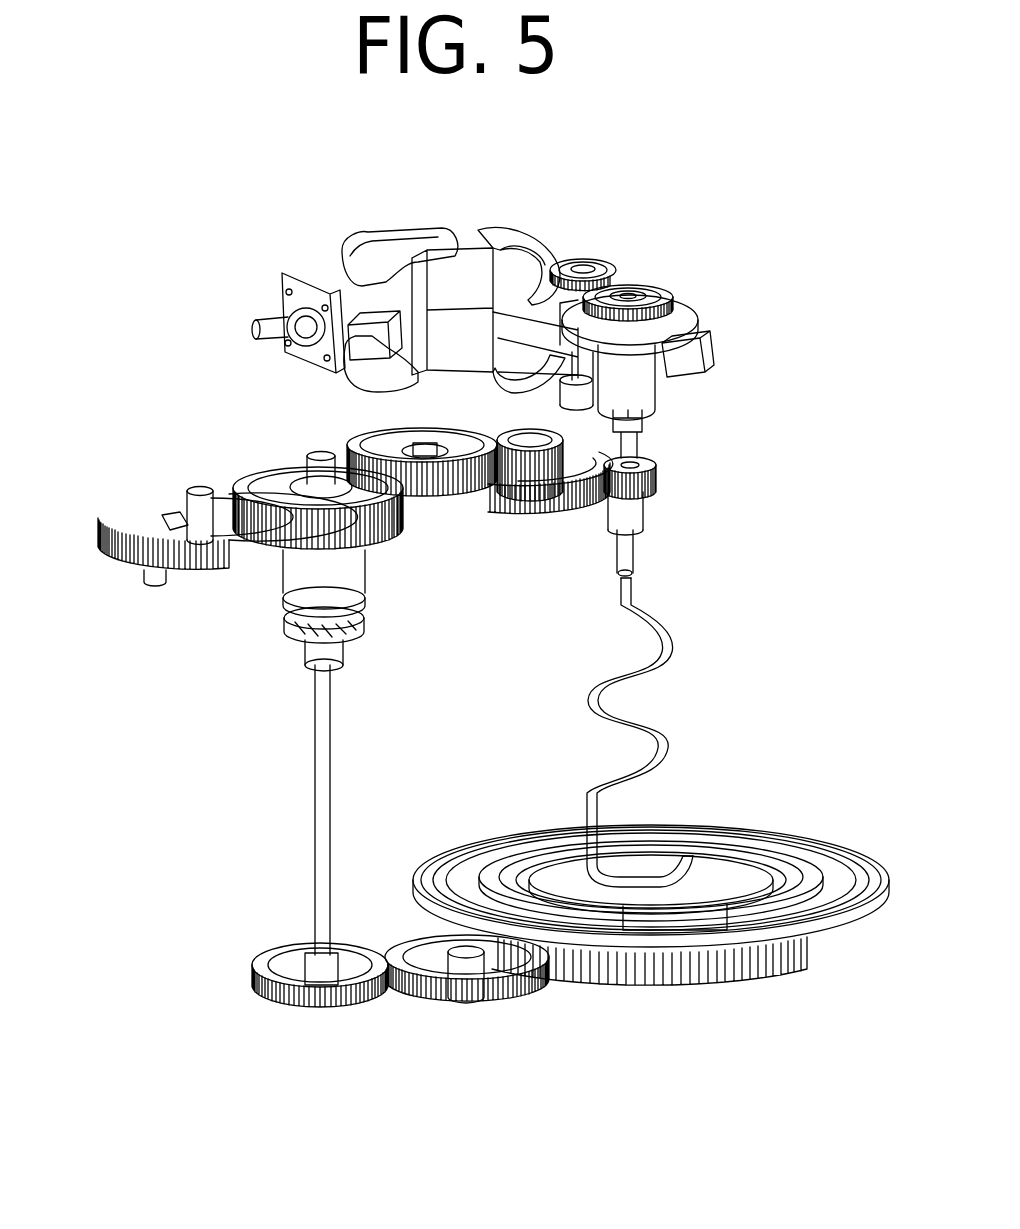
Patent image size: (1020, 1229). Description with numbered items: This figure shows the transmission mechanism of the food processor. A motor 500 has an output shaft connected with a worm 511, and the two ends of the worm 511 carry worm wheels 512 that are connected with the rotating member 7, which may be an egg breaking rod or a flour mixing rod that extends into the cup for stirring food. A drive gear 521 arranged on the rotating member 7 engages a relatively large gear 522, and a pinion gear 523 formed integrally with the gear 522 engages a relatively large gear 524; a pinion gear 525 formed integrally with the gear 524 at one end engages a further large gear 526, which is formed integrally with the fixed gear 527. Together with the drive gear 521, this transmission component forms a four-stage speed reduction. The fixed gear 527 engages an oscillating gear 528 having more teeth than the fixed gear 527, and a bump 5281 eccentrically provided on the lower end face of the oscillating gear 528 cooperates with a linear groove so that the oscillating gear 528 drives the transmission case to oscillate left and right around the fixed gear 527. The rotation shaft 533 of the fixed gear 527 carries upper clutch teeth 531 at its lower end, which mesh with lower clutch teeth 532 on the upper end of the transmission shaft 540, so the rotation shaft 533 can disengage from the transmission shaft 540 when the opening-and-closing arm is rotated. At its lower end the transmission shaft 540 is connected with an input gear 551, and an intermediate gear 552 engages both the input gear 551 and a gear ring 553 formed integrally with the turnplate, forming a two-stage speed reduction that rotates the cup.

The motor 500 is at (400, 230).
The worm 511 is at (636, 272).
The worm wheels 512 is at (596, 262).
The drive gear 521 is at (660, 478).
The gear 522 is at (548, 500).
The shaft 523 is at (642, 438).
The gear 524 is at (350, 442).
The pinion gear 525 is at (458, 500).
The gear 526 is at (262, 468).
The fixed gear 527 is at (372, 533).
The oscillating gear 528 is at (118, 508).
The bump 5281 is at (152, 585).
The upper clutch teeth 531 is at (366, 596).
The lower clutch teeth 532 is at (365, 630).
The rotation shaft 533 is at (318, 466).
The transmission shaft 540 is at (323, 830).
The input gear 551 is at (345, 1012).
The intermediate gear 552 is at (495, 1002).
The gear ring 553 is at (660, 1000).
The rotating member 7 is at (632, 573).